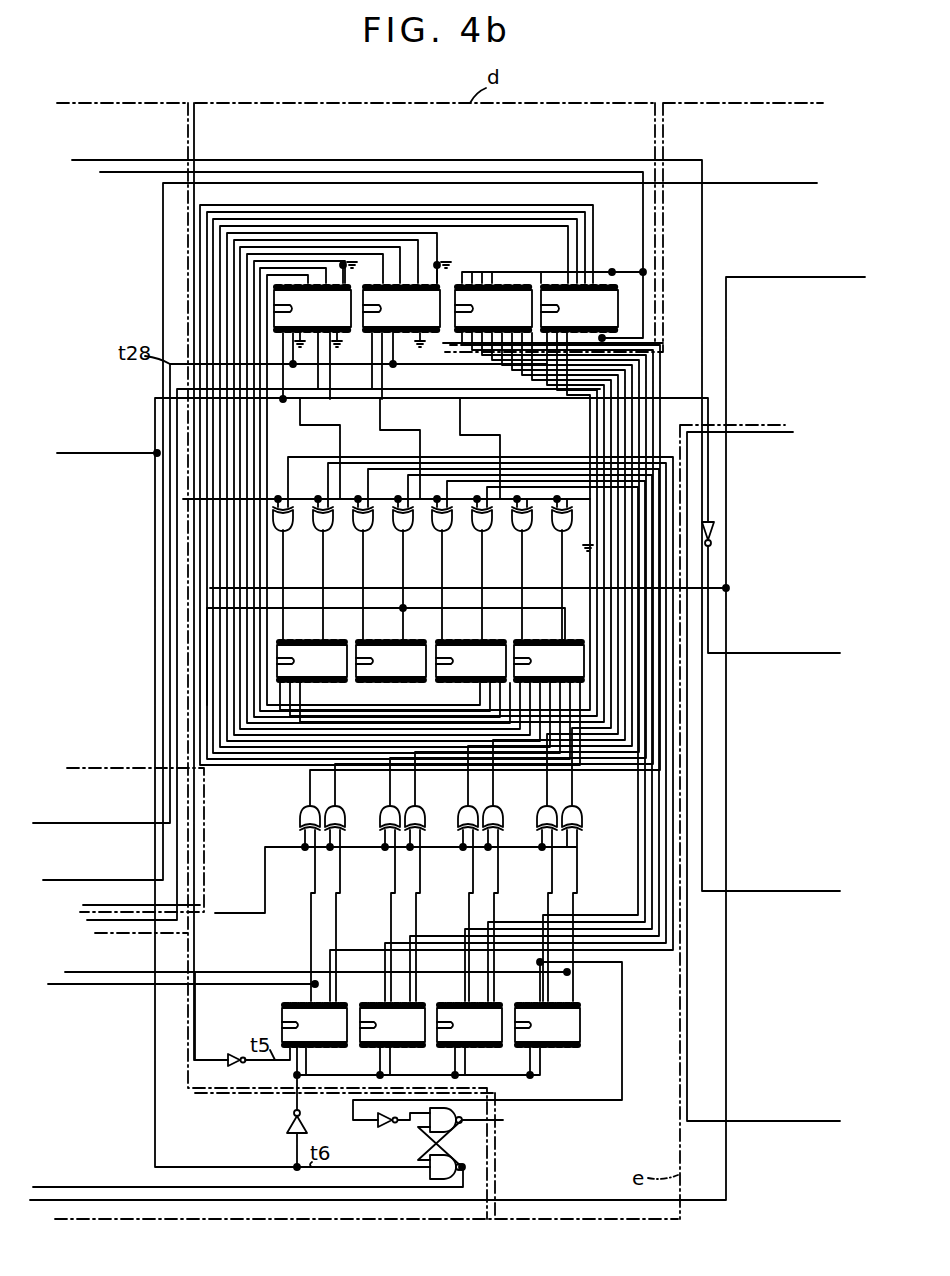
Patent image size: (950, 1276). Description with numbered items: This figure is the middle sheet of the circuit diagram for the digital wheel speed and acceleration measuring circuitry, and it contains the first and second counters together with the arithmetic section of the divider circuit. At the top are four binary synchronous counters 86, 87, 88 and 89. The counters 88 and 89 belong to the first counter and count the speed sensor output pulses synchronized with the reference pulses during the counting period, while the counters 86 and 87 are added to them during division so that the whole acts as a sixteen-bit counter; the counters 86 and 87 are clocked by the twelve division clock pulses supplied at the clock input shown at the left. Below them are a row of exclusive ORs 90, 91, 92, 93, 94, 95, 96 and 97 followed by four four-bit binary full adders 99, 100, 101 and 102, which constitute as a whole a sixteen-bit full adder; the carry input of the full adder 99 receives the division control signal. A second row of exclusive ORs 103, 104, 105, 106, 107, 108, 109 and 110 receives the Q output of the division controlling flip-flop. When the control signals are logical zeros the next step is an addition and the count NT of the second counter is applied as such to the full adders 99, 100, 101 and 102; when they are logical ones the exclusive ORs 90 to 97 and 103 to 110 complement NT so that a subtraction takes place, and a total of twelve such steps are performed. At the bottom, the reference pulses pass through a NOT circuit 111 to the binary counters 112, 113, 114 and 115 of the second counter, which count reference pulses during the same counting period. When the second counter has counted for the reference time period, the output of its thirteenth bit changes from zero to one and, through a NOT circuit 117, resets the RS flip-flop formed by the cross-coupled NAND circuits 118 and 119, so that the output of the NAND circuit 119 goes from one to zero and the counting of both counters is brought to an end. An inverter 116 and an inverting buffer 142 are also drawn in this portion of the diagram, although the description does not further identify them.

The binary synchronous counter 86 is at (350, 302).
The binary synchronous counter 87 is at (360, 327).
The binary synchronous counter 88 is at (505, 286).
The binary synchronous counter 89 is at (600, 286).
The exclusive OR 90 is at (281, 500).
The exclusive OR 91 is at (320, 500).
The exclusive OR 92 is at (360, 500).
The exclusive OR 93 is at (402, 500).
The exclusive OR 94 is at (442, 500).
The exclusive OR 95 is at (484, 535).
The exclusive OR 96 is at (522, 531).
The exclusive OR 97 is at (562, 532).
The four-bit binary full adder 99 is at (340, 680).
The four-bit binary full adder 100 is at (403, 612).
The four-bit binary full adder 101 is at (435, 683).
The four-bit binary full adder 102 is at (515, 683).
The exclusive OR 103 is at (303, 818).
The exclusive OR 104 is at (345, 812).
The exclusive OR 105 is at (388, 826).
The exclusive OR 106 is at (428, 812).
The exclusive OR 107 is at (466, 826).
The exclusive OR 108 is at (506, 812).
The exclusive OR 109 is at (545, 826).
The exclusive OR 110 is at (585, 810).
The NOT circuit 111 is at (237, 1056).
The binary counter 112 is at (343, 1033).
The binary counter 113 is at (420, 1033).
The binary counter 114 is at (497, 1033).
The binary counter 115 is at (575, 1033).
The inverter 116 is at (287, 1128).
The NOT circuit 117 is at (385, 1127).
The NAND circuit 118 is at (475, 1119).
The NAND circuit 119 is at (470, 1165).
The inverter 142 is at (716, 531).